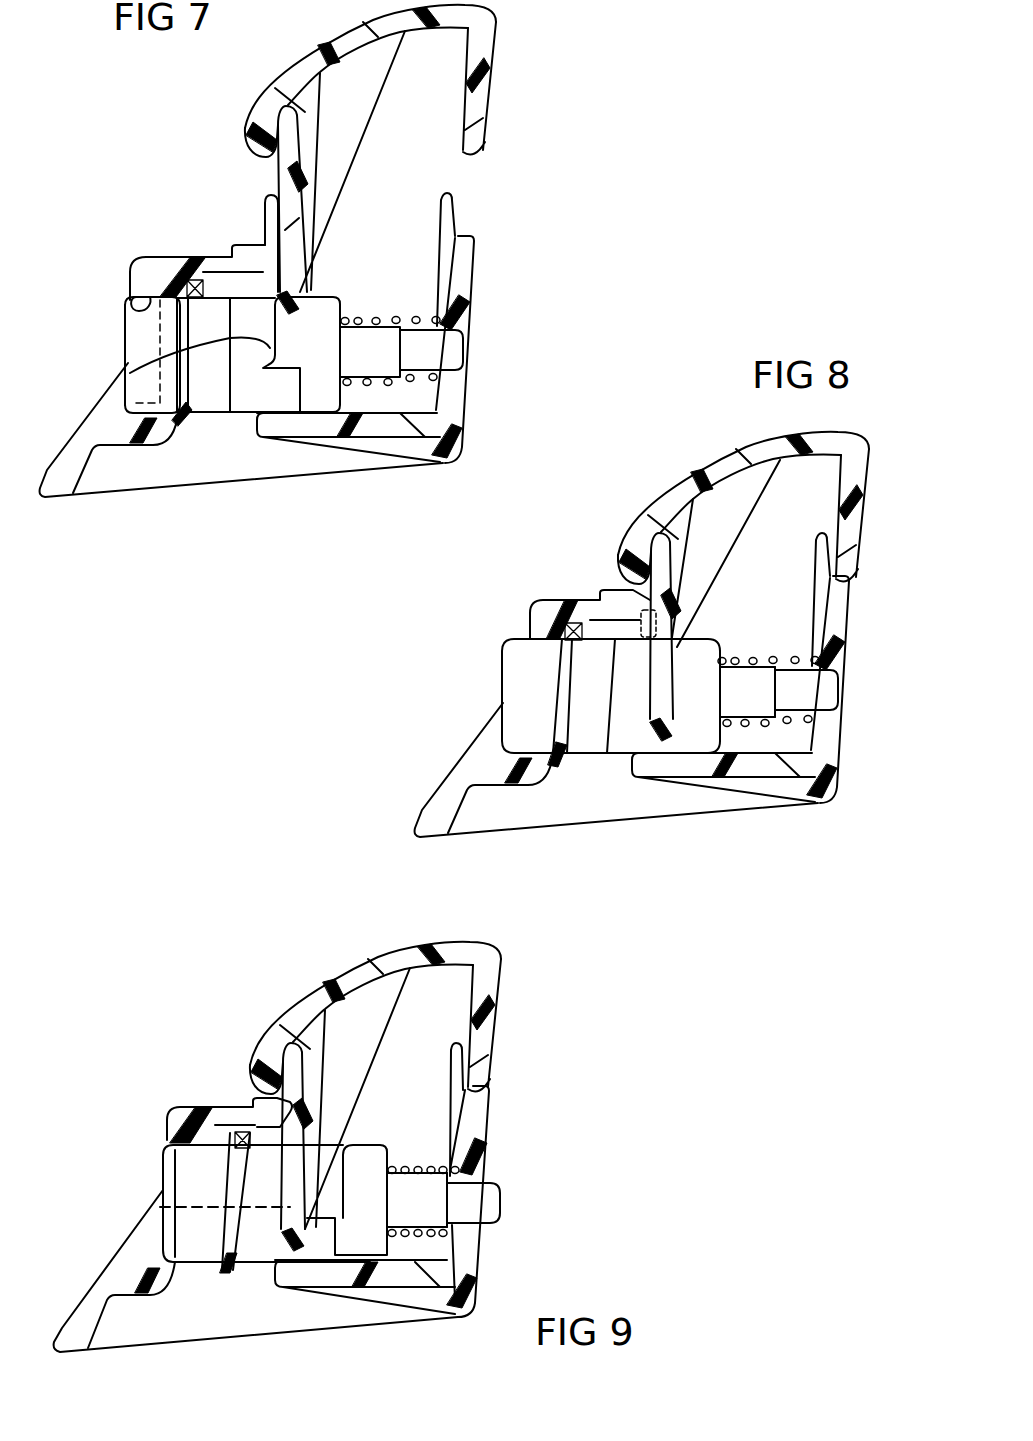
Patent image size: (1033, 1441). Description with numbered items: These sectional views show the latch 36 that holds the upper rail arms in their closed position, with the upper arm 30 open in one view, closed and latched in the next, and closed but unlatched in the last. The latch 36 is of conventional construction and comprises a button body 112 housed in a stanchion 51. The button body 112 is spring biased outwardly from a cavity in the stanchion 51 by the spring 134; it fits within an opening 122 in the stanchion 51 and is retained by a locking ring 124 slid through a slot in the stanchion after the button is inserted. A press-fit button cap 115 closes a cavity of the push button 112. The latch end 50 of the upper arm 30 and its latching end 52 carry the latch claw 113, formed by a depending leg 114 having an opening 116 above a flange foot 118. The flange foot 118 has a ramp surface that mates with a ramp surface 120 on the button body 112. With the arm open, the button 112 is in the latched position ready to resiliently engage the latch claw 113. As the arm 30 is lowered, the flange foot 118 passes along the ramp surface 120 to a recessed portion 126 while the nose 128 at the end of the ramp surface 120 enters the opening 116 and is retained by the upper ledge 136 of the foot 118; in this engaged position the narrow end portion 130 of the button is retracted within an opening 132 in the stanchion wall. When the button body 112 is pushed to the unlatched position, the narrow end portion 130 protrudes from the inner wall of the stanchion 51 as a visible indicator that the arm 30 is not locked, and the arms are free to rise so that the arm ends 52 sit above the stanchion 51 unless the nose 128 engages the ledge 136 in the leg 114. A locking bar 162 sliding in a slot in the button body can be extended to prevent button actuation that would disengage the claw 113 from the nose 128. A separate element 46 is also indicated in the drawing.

In FIG. 7, the upper arm 30 is at (547, 41).
In FIG. 7, the latch 36 is at (122, 257).
In FIG. 7, the latch face 46 is at (106, 324).
In FIG. 8, the latch end 50 is at (855, 800).
In FIG. 7, the stanchion 51 is at (548, 289).
In FIG. 7, the latch end 52 is at (514, 96).
In FIG. 7, the button body 112 is at (100, 352).
In FIG. 8, the button body 112 is at (475, 695).
In FIG. 7, the latch claw 113 is at (343, 178).
In FIG. 9, the latch claw 113 is at (358, 1078).
In FIG. 7, the leg 114 is at (303, 147).
In FIG. 8, the leg 114 is at (673, 570).
In FIG. 7, the button cap 115 is at (130, 393).
In FIG. 7, the opening 116 is at (290, 216).
In FIG. 7, the flange foot 118 is at (312, 297).
In FIG. 9, the flange foot 118 is at (283, 1253).
In FIG. 7, the ramp surface 120 is at (127, 377).
In FIG. 7, the opening 122 is at (138, 297).
In FIG. 7, the locking ring 124 is at (212, 258).
In FIG. 9, the locking ring 124 is at (223, 1273).
In FIG. 7, the recessed portion 126 is at (280, 437).
In FIG. 8, the recessed portion 126 is at (657, 760).
In FIG. 9, the recessed portion 126 is at (450, 1252).
In FIG. 7, the nose 128 is at (290, 348).
In FIG. 8, the nose 128 is at (675, 692).
In FIG. 9, the nose 128 is at (310, 1215).
In FIG. 8, the narrow end portion 130 is at (837, 690).
In FIG. 9, the narrow end portion 130 is at (497, 1208).
In FIG. 8, the opening 132 is at (838, 712).
In FIG. 9, the opening 132 is at (455, 1222).
In FIG. 7, the spring 134 is at (412, 387).
In FIG. 9, the spring 134 is at (417, 1166).
In FIG. 9, the upper ledge 136 is at (160, 1207).
In FIG. 8, the locking bar 162 is at (647, 627).